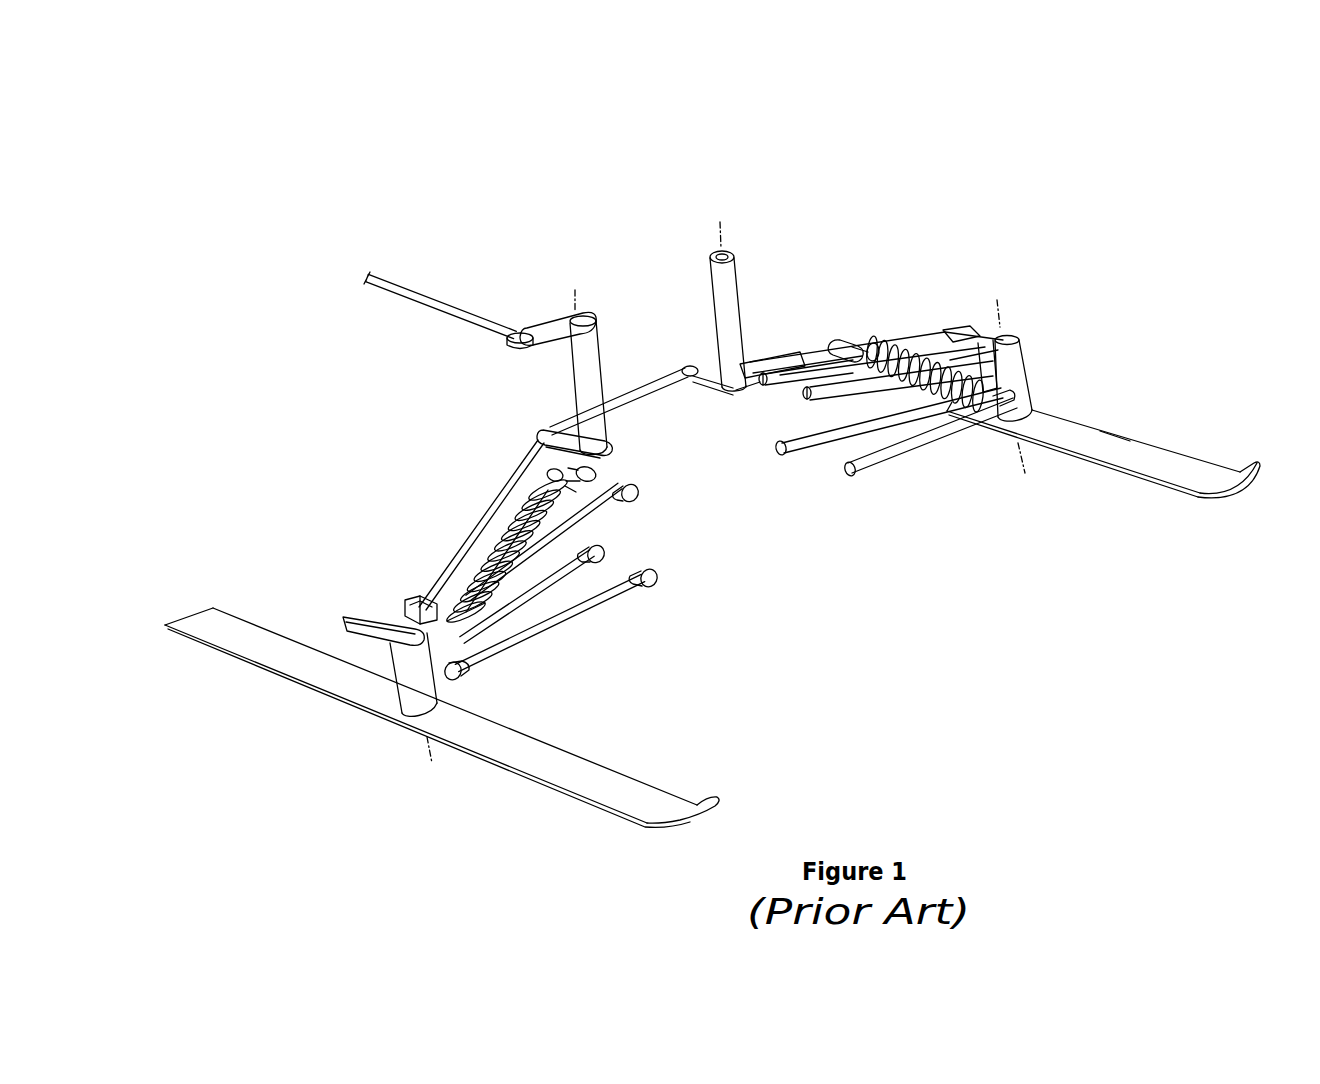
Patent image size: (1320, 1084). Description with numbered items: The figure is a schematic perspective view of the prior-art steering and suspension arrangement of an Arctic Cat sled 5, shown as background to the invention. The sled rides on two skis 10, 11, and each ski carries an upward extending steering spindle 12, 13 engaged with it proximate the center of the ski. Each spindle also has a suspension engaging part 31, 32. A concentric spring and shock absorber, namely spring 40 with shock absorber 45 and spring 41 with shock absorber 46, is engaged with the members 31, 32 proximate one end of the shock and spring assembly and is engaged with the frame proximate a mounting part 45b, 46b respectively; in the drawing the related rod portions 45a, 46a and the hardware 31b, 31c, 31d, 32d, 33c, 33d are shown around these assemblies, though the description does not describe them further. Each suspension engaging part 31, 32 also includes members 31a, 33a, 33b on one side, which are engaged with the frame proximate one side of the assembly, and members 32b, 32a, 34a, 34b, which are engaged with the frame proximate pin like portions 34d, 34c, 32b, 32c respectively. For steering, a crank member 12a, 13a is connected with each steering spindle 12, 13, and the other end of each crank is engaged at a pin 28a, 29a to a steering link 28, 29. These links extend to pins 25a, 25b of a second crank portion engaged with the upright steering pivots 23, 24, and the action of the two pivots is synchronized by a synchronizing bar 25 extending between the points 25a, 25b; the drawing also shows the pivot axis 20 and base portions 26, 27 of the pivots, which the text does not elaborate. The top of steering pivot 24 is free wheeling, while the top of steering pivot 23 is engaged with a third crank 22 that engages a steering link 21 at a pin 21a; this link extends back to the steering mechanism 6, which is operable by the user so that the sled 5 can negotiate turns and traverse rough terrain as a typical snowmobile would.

The sled 5 is at (883, 208).
The steering mechanism 6 is at (353, 225).
The ski 10 is at (490, 797).
The ski 11 is at (1150, 425).
The steering spindle 12 is at (407, 685).
The crank member 12a is at (380, 630).
The steering spindle 13 is at (1025, 366).
The crank member 13a is at (1003, 333).
The steering axis 20 is at (575, 290).
The steering link 21 is at (407, 283).
The pin 21a is at (517, 340).
The third crank 22 is at (547, 330).
The steering pivot 23 is at (587, 360).
The steering pivot 24 is at (727, 293).
The synchronizing bar 25 is at (633, 390).
The pin 25a is at (547, 430).
The pin 25b is at (687, 383).
The column base plate 26 is at (610, 445).
The rear column base 27 is at (740, 393).
The steering link 28 is at (447, 528).
The pin 28a is at (357, 613).
The steering link 29 is at (893, 337).
The pin 29a is at (965, 322).
The suspension engaging part 31 is at (443, 647).
The member 31a is at (600, 607).
The upper link rod 31b is at (562, 580).
The lower link rod end 31c is at (658, 578).
The upper link rod end 31d is at (600, 547).
The suspension engaging part 32 is at (1000, 377).
The member 32a is at (897, 447).
The member 32b is at (840, 430).
The pin like portion 32c is at (863, 477).
The rear link rod end 32d is at (787, 457).
The member 33a is at (630, 505).
The member 33b is at (463, 560).
The shock rod end 33c is at (635, 487).
The spring mount pin 33d is at (597, 475).
The member 34a is at (847, 389).
The member 34b is at (817, 367).
The pin like portion 34c is at (813, 398).
The pin like portion 34d is at (777, 385).
The spring 40 is at (580, 495).
The spring 41 is at (877, 343).
The shock absorber 45 is at (478, 585).
The front shock rod 45a is at (580, 487).
The mounting part 45b is at (545, 479).
The shock absorber 46 is at (940, 340).
The shock rod 46a is at (877, 343).
The mounting part 46b is at (857, 343).